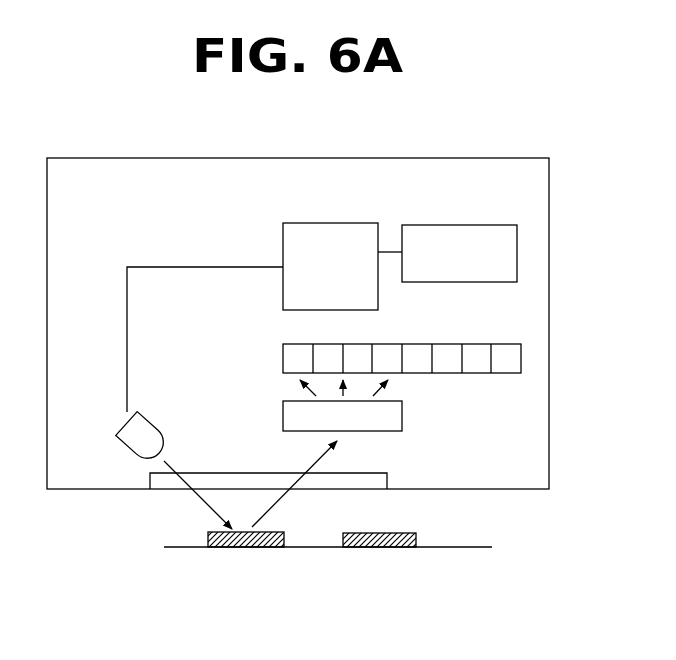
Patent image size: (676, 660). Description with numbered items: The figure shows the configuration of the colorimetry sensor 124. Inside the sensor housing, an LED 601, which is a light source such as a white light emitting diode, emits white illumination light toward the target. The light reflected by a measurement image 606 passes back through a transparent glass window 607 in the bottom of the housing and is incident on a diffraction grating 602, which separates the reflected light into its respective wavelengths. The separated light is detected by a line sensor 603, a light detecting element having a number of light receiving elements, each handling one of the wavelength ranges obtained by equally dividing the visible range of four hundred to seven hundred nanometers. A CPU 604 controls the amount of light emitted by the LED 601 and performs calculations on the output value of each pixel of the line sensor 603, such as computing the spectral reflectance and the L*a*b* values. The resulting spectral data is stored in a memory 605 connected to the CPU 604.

The colorimetry sensor 124 is at (308, 157).
The LED 601 is at (162, 431).
The diffraction grating 602 is at (403, 417).
The line sensor 603 is at (490, 344).
The CPU 604 is at (355, 223).
The memory 605 is at (472, 225).
The measurement image 606 is at (393, 532).
The transparent glass window 607 is at (374, 473).